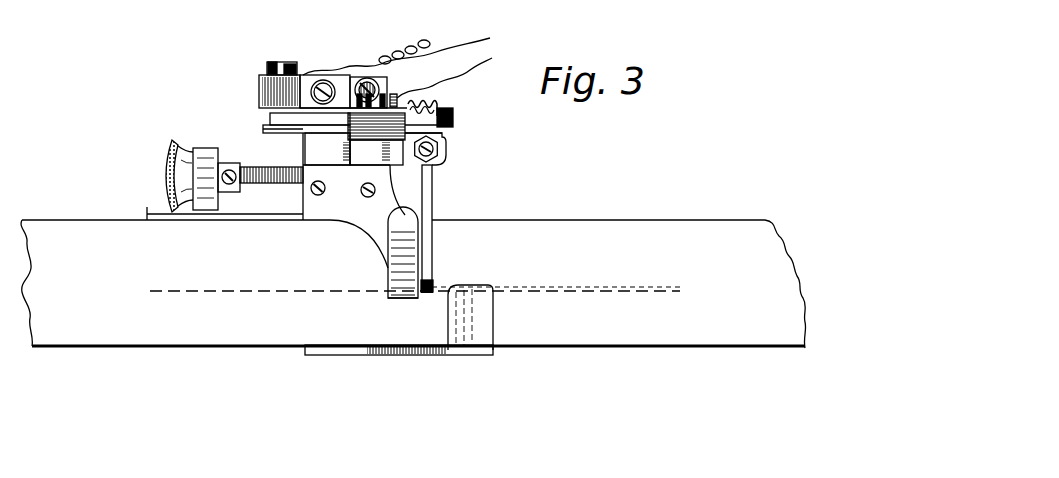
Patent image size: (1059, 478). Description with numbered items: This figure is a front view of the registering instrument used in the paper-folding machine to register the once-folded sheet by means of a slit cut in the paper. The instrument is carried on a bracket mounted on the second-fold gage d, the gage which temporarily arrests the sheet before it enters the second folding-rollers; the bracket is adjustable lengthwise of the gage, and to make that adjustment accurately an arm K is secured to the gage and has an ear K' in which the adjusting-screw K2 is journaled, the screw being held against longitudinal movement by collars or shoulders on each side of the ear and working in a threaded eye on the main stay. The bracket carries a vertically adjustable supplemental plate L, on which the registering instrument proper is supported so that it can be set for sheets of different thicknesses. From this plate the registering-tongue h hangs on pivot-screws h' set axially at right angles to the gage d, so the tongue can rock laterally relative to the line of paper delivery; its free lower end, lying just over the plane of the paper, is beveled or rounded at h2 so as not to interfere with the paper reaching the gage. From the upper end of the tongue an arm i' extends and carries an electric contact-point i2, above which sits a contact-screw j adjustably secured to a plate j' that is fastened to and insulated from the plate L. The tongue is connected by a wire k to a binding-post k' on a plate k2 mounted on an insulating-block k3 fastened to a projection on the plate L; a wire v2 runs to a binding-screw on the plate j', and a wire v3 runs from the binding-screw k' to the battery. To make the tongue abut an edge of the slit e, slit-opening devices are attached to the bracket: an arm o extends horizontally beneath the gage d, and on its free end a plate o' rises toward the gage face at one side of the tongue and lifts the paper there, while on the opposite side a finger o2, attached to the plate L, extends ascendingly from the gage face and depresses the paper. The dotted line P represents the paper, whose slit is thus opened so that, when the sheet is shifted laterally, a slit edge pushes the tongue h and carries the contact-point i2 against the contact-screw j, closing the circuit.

The gage d is at (413, 284).
The paper P is at (305, 291).
The arm o is at (399, 366).
The plate o' is at (470, 317).
The finger o2 is at (388, 268).
The registering-tongue h is at (422, 228).
The beveled or rounded lower end h2 is at (433, 290).
The slit e is at (415, 297).
The pivot-screws h' is at (441, 150).
The insulating-block k3 is at (345, 135).
The binding-post k' is at (400, 101).
The contact-screw j is at (292, 111).
The electric contact-point i2 is at (264, 129).
The arm i' is at (344, 136).
The supplemental plate L is at (281, 140).
The plate j' is at (304, 85).
The plate k2 is at (373, 81).
The wire k is at (437, 101).
The wire v2 is at (396, 53).
The wire v3 is at (444, 78).
The ear K' is at (192, 164).
The arm K is at (209, 202).
The adjusting-screw K2 is at (262, 184).